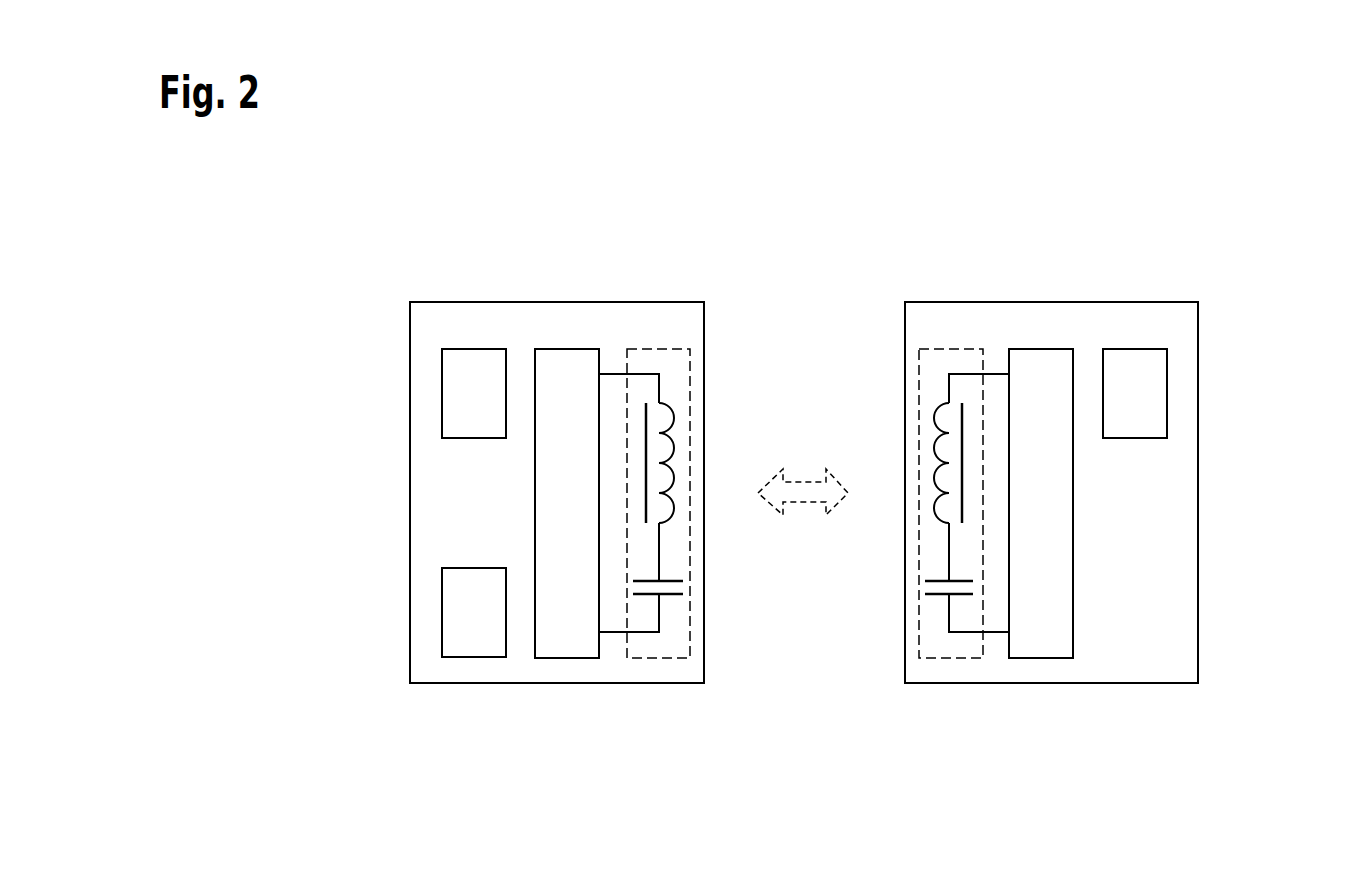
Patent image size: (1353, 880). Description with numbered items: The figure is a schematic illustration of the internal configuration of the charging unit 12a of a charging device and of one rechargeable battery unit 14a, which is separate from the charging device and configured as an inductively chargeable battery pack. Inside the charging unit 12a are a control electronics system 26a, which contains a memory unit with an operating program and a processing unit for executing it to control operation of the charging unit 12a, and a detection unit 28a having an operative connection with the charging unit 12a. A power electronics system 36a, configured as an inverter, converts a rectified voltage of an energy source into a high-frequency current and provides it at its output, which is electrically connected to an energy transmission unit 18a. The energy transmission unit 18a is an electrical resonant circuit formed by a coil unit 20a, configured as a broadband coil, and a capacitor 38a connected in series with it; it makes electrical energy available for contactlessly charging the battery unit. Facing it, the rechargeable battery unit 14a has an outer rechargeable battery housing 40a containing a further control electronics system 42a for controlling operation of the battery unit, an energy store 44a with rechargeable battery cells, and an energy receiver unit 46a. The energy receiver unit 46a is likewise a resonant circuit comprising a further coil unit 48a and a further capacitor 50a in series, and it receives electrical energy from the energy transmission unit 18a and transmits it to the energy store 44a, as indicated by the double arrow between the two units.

The charging unit 12a is at (446, 720).
The rechargeable battery unit 14a is at (1218, 232).
The energy transmission unit 18a is at (650, 350).
The coil unit 20a is at (624, 430).
The control electronics system 26a is at (442, 611).
The detection unit 28a is at (442, 392).
The power electronics system 36a is at (565, 658).
The capacitor 38a is at (684, 593).
The rechargeable battery housing 40a is at (1198, 612).
The further control electronics system 42a is at (1167, 392).
The energy store 44a is at (1040, 658).
The energy receiver unit 46a is at (955, 350).
The further coil unit 48a is at (982, 430).
The further capacitor 50a is at (918, 603).